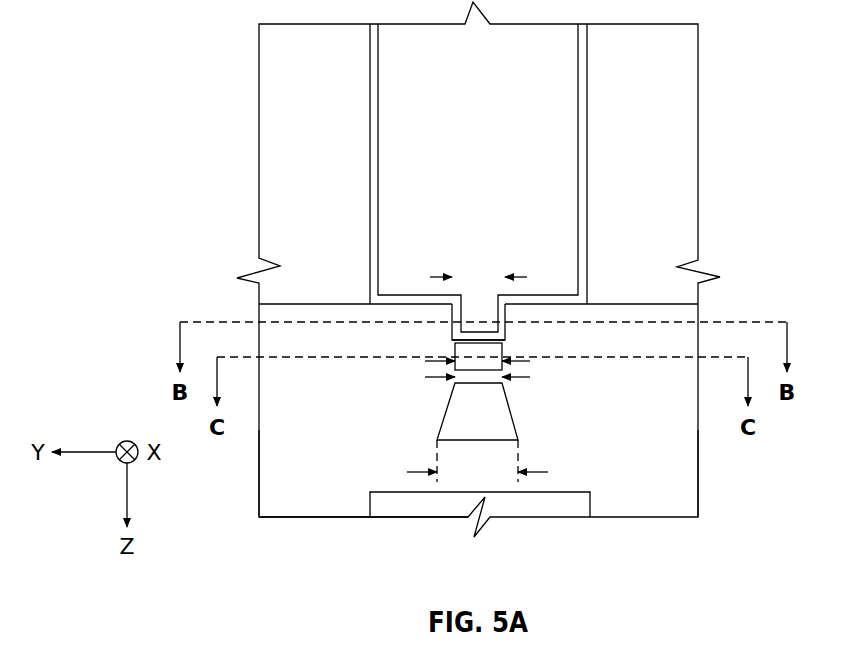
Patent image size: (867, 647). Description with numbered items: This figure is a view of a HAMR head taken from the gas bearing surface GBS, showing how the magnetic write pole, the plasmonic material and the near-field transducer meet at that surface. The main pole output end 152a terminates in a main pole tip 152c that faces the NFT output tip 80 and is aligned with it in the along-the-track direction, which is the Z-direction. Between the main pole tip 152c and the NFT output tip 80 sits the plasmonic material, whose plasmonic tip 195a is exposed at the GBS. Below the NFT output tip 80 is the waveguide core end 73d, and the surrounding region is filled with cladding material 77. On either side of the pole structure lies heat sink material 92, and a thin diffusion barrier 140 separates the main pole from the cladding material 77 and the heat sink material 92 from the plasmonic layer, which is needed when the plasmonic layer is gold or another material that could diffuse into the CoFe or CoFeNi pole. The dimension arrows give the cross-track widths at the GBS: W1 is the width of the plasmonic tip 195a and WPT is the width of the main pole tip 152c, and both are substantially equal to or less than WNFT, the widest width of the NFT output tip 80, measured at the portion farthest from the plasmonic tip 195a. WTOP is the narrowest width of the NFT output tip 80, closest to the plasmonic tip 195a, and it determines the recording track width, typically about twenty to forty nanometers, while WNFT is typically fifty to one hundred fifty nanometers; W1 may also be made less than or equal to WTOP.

The heat sink material 92 is at (278, 160).
The diffusion barrier 140 is at (372, 175).
The main pole output end 152a is at (402, 126).
The main pole tip 152c is at (468, 307).
The plasmonic tip 195a is at (462, 352).
The NFT output tip 80 is at (463, 430).
The cladding material 77 is at (280, 447).
The waveguide core end 73d is at (562, 507).
The gas bearing surface GBS is at (684, 473).
The cross-track width of main pole tip WPT is at (442, 277).
The cross-track width of plasmonic tip W1 is at (519, 361).
The narrowest width of NFT output tip WTOP is at (519, 377).
The widest width of NFT output tip WNFT is at (543, 472).